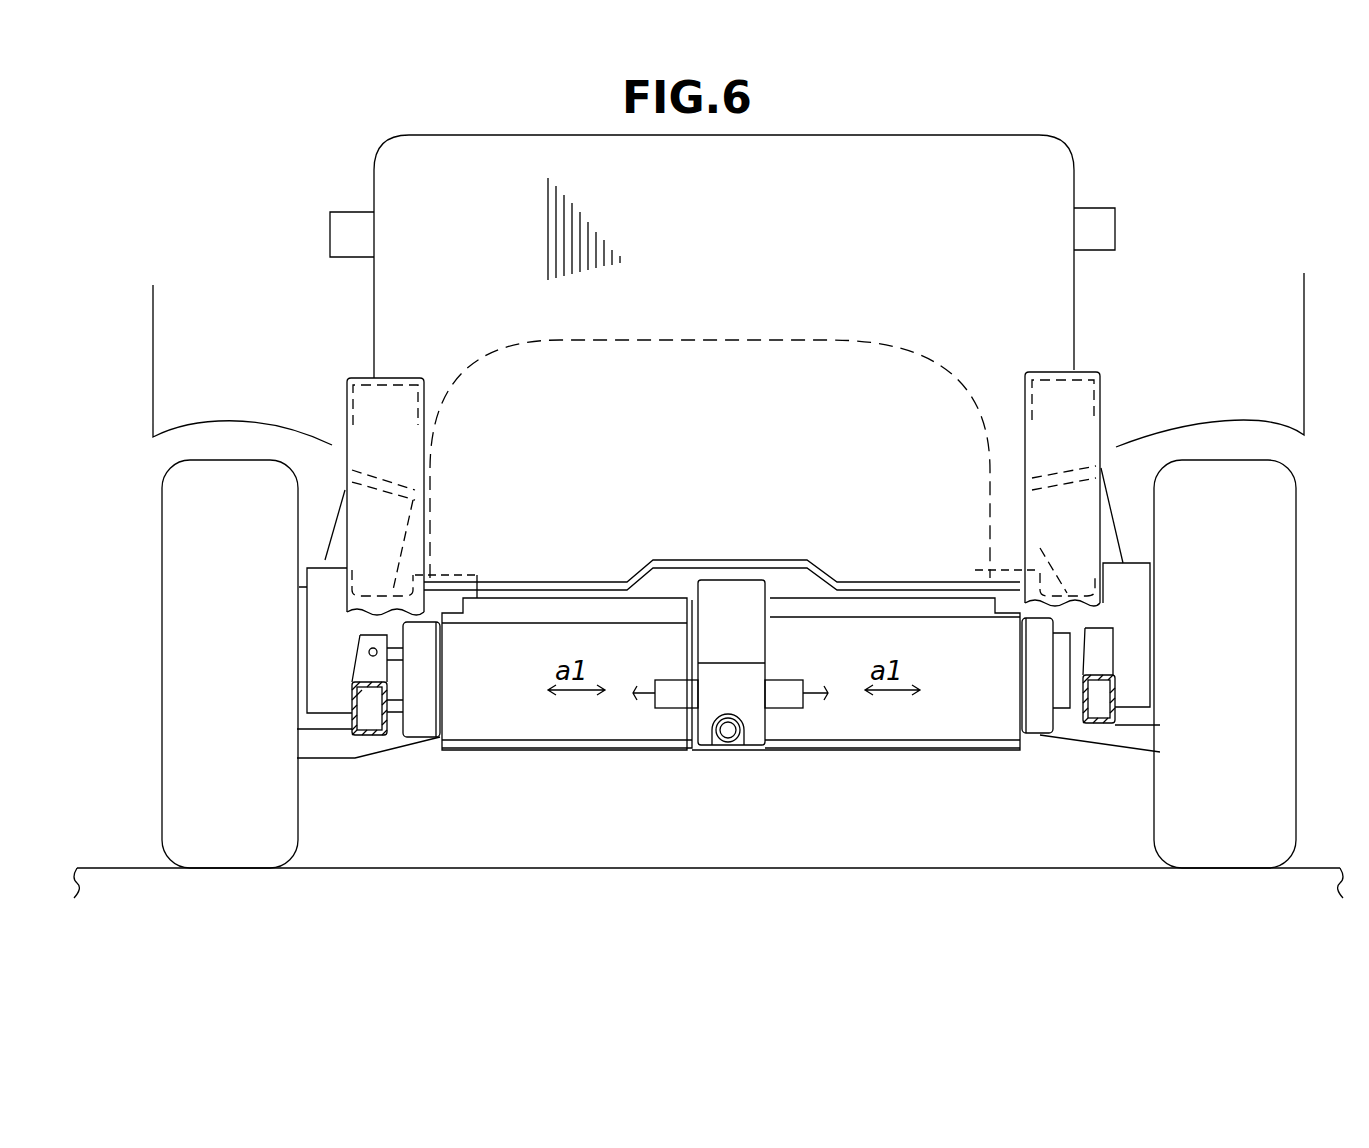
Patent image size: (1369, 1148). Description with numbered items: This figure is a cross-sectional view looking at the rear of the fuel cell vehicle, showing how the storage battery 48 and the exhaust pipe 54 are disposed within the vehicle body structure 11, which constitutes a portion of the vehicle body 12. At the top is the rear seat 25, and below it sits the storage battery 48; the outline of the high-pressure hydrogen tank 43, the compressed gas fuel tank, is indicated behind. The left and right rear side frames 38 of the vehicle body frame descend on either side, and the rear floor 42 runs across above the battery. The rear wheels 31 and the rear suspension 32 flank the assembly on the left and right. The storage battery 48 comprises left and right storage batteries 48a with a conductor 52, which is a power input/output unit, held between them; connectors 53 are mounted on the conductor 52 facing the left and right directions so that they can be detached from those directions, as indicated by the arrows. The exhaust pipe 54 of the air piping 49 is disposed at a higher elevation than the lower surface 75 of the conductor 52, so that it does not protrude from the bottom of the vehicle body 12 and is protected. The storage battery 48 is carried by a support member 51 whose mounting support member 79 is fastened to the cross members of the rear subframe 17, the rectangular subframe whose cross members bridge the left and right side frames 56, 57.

The vehicle body 12 is at (175, 222).
The rear seat 25 is at (385, 318).
The high-pressure hydrogen tank 43 is at (850, 330).
The rear side frame 38 is at (345, 405).
The vehicle body structure 11 is at (315, 603).
The rear subframe 17 is at (320, 637).
The rear wheel 31 is at (145, 525).
The rear suspension 32 is at (1123, 520).
The rear floor 42 is at (538, 580).
The storage battery 48 is at (548, 748).
The storage battery 48a is at (476, 741).
The support member 51 is at (986, 752).
The mounting support member 79 is at (1010, 750).
The conductor 52 is at (700, 630).
The connector 53 is at (682, 708).
The exhaust pipe 54 is at (742, 747).
The lower surface 75 is at (757, 745).
The air piping 49 is at (718, 757).
The side frame 57 is at (355, 656).
The side frame 56 is at (1113, 652).